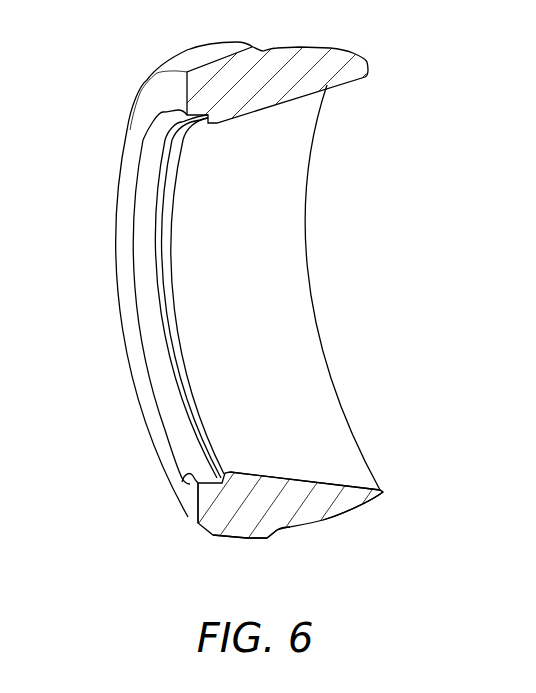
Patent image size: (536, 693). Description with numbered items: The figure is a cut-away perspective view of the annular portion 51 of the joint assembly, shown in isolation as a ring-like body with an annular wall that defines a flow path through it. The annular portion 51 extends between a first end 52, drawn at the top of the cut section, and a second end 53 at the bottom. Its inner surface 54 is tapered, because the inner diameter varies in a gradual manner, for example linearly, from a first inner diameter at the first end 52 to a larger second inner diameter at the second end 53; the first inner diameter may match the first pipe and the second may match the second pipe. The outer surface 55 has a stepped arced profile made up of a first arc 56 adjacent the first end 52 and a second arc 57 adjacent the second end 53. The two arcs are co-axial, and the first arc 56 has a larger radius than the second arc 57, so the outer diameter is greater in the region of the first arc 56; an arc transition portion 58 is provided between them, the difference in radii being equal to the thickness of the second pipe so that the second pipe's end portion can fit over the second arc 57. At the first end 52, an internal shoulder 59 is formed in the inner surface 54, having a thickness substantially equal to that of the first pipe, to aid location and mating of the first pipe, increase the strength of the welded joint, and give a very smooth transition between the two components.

The annular portion 51 is at (112, 50).
The first end 52 is at (197, 502).
The second end 53 is at (382, 492).
The inner surface 54 is at (302, 479).
The outer surface 55 is at (328, 548).
The first arc 56 is at (233, 540).
The second arc 57 is at (352, 515).
The arc transition portion 58 is at (278, 536).
The internal shoulder 59 is at (190, 473).